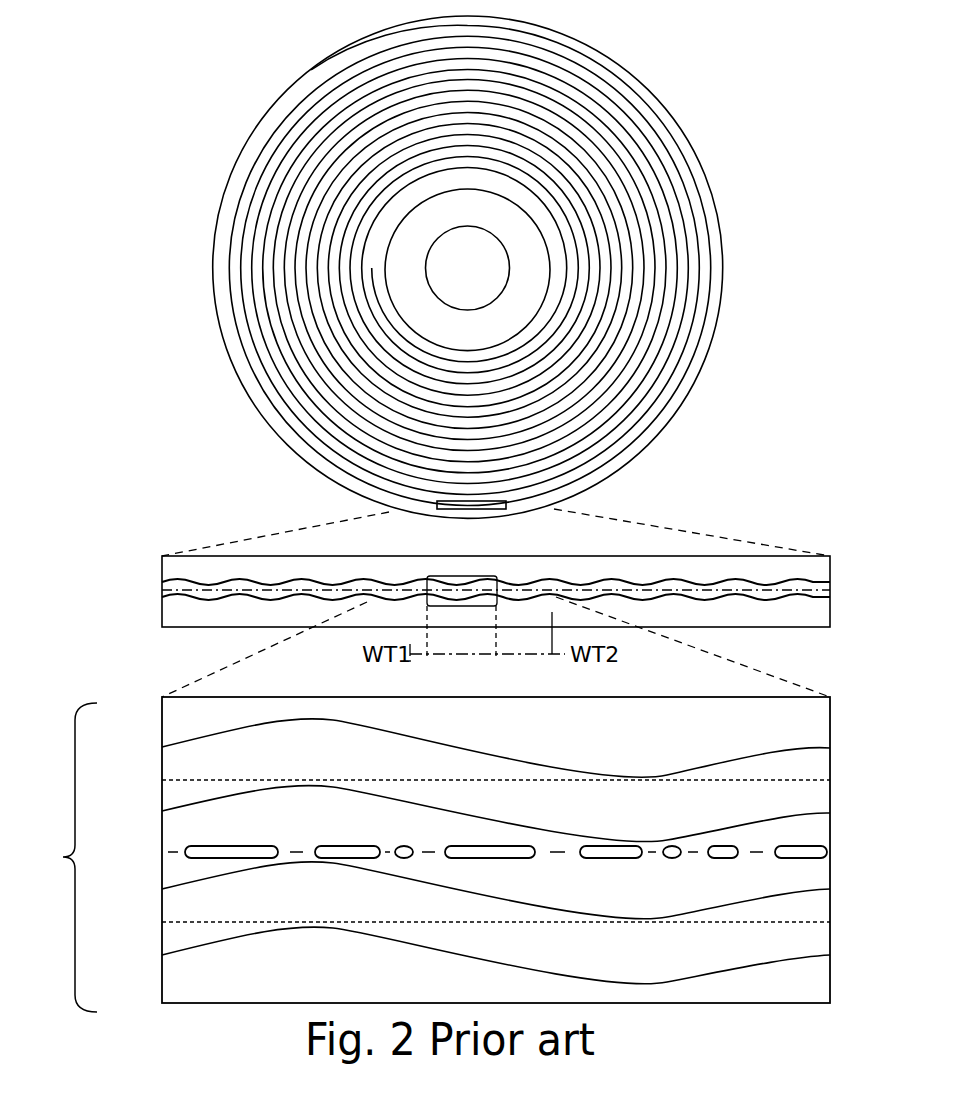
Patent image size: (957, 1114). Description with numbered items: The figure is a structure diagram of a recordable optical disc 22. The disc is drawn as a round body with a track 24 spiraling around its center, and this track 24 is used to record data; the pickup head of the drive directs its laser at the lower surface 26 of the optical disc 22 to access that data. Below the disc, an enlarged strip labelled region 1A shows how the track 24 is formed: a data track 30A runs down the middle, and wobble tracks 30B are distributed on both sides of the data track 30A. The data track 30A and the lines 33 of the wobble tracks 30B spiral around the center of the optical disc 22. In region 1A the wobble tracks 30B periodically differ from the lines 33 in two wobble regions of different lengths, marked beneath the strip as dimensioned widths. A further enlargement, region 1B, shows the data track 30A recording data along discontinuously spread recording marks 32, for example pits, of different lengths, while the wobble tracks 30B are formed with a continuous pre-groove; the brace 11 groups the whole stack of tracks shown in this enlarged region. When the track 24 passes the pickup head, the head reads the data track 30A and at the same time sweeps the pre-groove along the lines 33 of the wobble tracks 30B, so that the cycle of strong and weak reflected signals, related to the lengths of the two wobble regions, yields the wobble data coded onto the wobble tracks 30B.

The optical disc 22 is at (299, 64).
The track 24 is at (278, 405).
The lower surface 26 is at (613, 465).
The data track 30A is at (156, 580).
The wobble tracks 30B is at (222, 576).
The recording marks 32 is at (216, 862).
The lines 33 is at (822, 582).
The disc layer stack 11 is at (66, 857).
The region 1A is at (772, 628).
The region 1B is at (773, 1006).